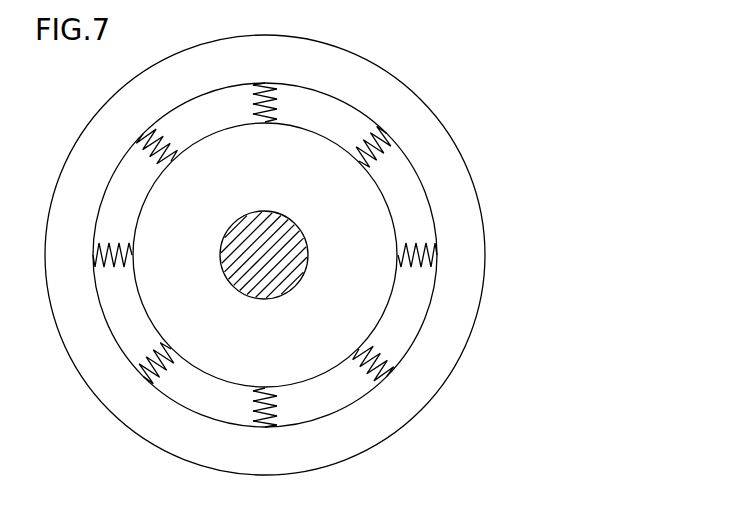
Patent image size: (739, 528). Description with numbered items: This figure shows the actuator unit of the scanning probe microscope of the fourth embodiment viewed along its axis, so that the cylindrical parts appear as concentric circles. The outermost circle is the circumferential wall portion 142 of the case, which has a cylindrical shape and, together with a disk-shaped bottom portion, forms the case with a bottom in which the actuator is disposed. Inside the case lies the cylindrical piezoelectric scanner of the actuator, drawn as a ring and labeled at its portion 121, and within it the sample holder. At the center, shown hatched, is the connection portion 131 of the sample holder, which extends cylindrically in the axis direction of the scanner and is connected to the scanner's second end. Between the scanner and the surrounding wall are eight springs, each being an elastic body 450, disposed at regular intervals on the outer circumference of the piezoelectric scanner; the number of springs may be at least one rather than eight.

The inner wall (of housing 120) 121 is at (378, 183).
The circumferential wall portion 142 is at (482, 218).
The elastic body 450 is at (420, 265).
The connection portion 131 is at (308, 268).